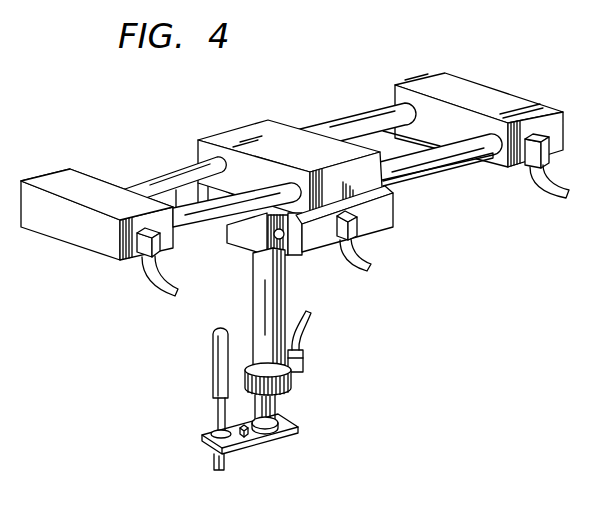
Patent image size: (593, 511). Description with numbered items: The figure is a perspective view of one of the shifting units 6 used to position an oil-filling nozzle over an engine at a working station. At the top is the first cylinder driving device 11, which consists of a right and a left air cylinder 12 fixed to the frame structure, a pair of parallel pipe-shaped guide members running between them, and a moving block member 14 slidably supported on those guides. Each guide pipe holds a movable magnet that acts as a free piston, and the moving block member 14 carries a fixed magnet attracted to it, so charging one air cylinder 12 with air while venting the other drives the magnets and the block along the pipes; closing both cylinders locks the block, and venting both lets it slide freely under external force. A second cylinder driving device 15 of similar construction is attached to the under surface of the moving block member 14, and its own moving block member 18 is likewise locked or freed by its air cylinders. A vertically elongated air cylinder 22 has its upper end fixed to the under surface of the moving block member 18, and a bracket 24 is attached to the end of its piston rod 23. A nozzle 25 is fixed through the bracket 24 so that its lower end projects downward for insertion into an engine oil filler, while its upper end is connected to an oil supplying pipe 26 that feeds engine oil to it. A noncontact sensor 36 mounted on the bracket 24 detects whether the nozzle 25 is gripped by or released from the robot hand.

The shifting unit 6 is at (386, 64).
The first cylinder driving device 11 is at (407, 185).
The air cylinder 12 is at (518, 100).
The moving block member 14 is at (267, 118).
The second cylinder driving device 15 is at (395, 230).
The moving block member 18 is at (248, 243).
The air cylinder 22 is at (282, 290).
The piston rod 23 is at (284, 400).
The bracket 24 is at (254, 440).
The nozzle 25 is at (216, 458).
The oil supplying pipe 26 is at (212, 362).
The noncontact sensor 36 is at (262, 436).